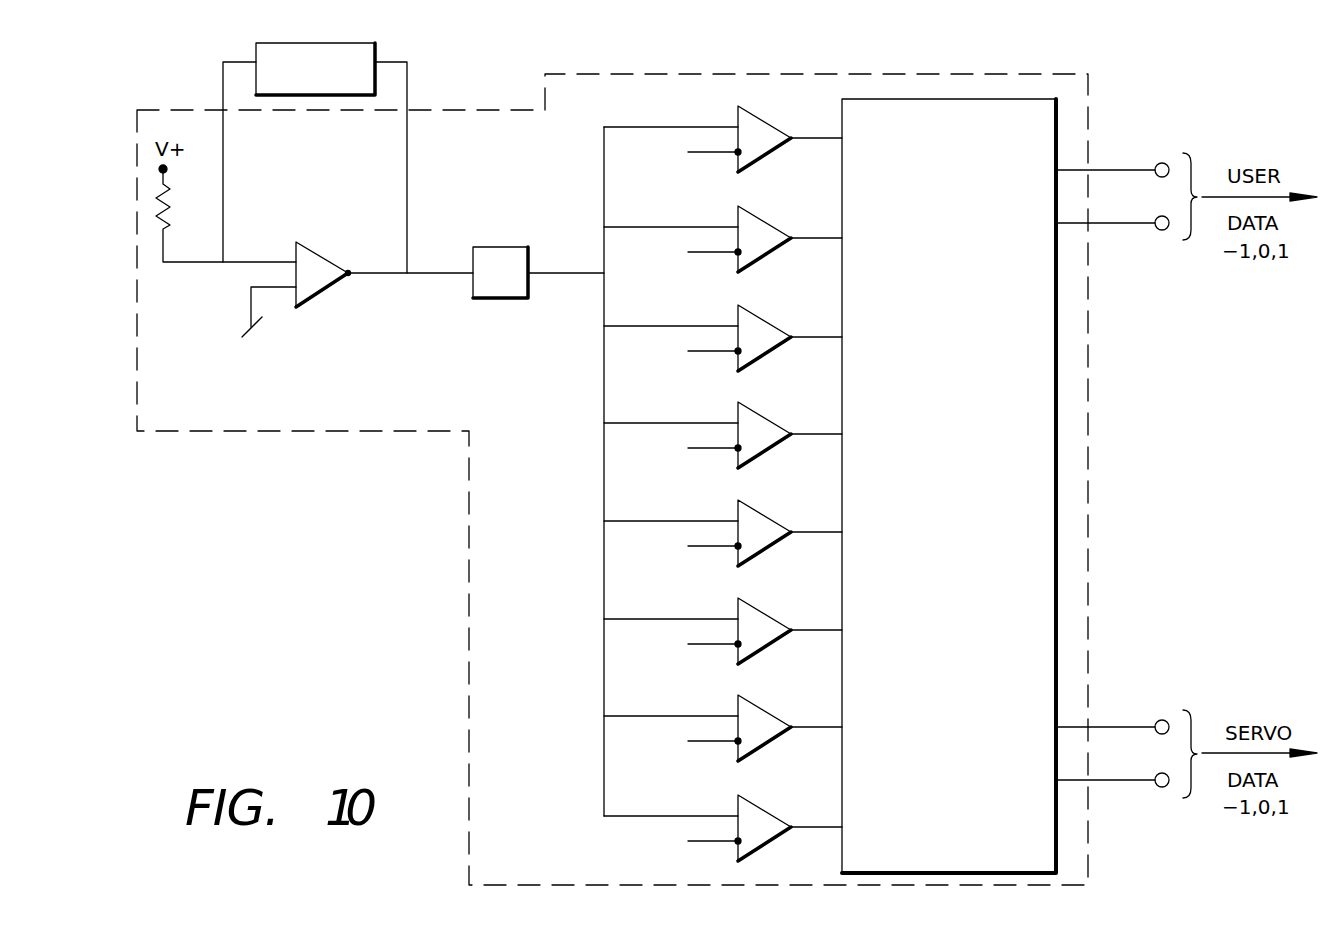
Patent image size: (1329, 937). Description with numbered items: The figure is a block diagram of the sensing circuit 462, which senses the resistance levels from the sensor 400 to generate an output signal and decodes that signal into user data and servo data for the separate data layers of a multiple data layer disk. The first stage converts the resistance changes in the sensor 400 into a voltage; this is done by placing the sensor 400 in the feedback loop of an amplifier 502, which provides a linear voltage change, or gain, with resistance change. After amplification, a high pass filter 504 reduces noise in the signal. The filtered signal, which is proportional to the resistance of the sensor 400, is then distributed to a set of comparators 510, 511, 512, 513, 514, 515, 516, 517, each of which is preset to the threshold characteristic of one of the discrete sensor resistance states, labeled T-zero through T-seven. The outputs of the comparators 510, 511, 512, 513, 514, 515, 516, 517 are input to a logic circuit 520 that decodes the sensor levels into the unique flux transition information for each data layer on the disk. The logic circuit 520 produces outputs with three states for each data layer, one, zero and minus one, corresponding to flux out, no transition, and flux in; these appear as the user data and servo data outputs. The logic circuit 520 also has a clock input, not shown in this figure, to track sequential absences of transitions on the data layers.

The sensor 400 is at (376, 48).
The sensing circuit 462 is at (307, 431).
The amplifier 502 is at (320, 296).
The high pass filter 504 is at (502, 257).
The comparator 510 is at (764, 116).
The comparator 511 is at (764, 216).
The comparator 512 is at (764, 315).
The comparator 513 is at (764, 412).
The comparator 514 is at (764, 510).
The comparator 515 is at (764, 608).
The comparator 516 is at (764, 705).
The comparator 517 is at (764, 805).
The logic circuit 520 is at (1033, 567).